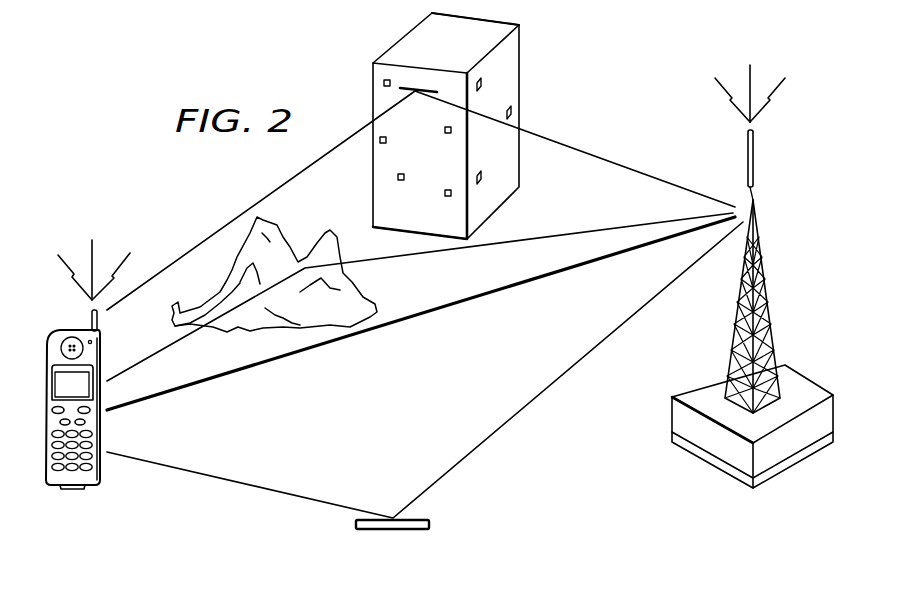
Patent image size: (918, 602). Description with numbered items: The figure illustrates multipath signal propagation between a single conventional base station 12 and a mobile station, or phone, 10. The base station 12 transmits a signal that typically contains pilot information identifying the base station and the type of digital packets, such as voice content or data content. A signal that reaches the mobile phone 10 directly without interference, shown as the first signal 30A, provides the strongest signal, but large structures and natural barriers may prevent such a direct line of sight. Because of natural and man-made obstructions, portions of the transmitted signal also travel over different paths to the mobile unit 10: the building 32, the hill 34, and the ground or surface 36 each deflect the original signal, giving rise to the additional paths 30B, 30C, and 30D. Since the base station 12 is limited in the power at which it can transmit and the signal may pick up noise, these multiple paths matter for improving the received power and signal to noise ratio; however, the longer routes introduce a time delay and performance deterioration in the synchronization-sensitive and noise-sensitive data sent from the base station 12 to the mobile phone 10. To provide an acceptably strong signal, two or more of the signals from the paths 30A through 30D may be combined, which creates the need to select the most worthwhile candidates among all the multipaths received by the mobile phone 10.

The mobile station 10 is at (68, 490).
The conventional base station 12 is at (753, 152).
The first signal 30A is at (349, 343).
The multipath signal path 30B is at (612, 162).
The multipath signal path 30C is at (517, 415).
The multipath signal path 30D is at (183, 339).
The building 32 is at (530, 61).
The hill 34 is at (292, 242).
The ground or surface 36 is at (408, 531).